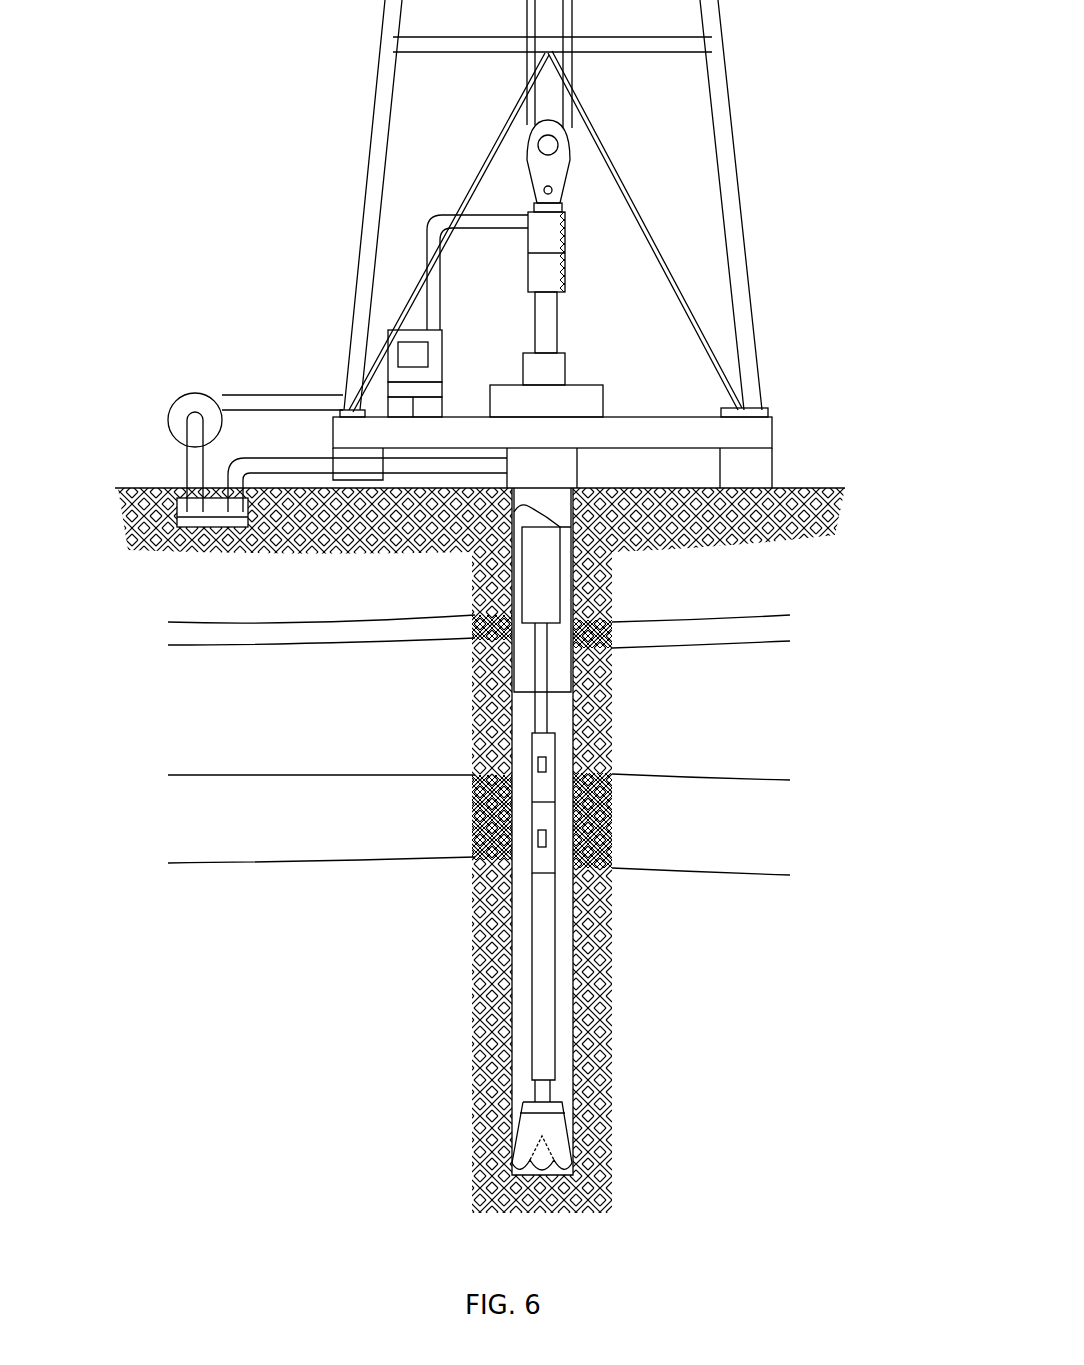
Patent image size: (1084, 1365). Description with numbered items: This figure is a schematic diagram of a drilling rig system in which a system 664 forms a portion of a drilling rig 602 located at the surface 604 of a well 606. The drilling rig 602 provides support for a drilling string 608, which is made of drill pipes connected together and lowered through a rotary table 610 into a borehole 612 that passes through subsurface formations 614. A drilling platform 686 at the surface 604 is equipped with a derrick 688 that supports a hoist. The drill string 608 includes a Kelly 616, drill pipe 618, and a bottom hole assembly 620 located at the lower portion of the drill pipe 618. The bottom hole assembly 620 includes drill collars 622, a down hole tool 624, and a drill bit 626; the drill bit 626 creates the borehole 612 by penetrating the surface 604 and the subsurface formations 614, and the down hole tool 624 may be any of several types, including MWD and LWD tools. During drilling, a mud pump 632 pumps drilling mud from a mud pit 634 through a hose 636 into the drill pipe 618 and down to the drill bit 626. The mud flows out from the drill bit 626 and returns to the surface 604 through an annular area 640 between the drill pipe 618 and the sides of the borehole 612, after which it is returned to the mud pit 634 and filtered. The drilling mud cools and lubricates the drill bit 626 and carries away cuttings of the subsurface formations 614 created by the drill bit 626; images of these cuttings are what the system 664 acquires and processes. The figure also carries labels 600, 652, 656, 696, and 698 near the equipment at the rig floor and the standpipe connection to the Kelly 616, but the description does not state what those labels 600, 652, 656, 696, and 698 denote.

The drilling assembly 600 is at (445, 312).
The drilling rig 602 is at (745, 208).
The surface 604 is at (828, 486).
The well 606 is at (583, 487).
The drilling string 608 is at (558, 913).
The rotary table 610 is at (603, 407).
The borehole 612 is at (568, 1007).
The subsurface formations 614 is at (155, 622).
The Kelly 616 is at (557, 315).
The drill pipe 618 is at (542, 665).
The bottom hole assembly 620 is at (467, 688).
The drill collars 622 is at (560, 574).
The down hole tool 624 is at (540, 1043).
The drill bit 626 is at (550, 1125).
The mud pump 632 is at (202, 392).
The mud pit 634 is at (197, 528).
The hose 636 is at (310, 392).
The annular area 640 is at (565, 738).
The control unit 652 is at (383, 335).
The standpipe 656 is at (477, 272).
The system 664 is at (290, 117).
The drilling platform 686 is at (772, 422).
The derrick 688 is at (727, 78).
The sensor 696 is at (430, 355).
The kelly bushing 698 is at (567, 370).